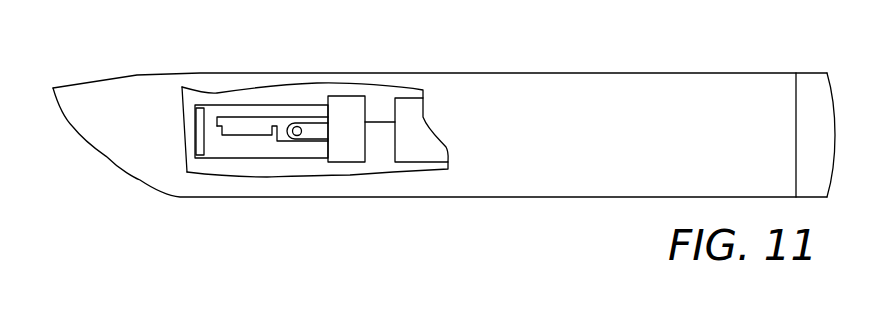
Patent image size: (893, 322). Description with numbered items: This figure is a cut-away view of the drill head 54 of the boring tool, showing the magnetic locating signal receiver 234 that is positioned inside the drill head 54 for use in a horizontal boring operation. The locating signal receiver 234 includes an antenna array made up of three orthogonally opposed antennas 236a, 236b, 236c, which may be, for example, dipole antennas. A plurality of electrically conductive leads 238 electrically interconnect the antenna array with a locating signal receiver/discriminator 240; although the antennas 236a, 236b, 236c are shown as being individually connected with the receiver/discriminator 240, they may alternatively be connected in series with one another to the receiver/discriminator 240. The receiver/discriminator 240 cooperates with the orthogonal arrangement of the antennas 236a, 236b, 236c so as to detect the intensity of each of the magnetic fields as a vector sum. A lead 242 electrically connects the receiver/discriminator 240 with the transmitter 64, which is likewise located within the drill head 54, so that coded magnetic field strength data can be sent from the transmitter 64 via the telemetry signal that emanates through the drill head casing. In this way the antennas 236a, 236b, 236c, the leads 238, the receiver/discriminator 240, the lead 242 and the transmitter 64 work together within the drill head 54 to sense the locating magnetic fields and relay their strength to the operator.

The drill head 54 is at (579, 73).
The transmitter 64 is at (407, 98).
The locating signal receiver 234 is at (265, 101).
The antenna 236a is at (245, 126).
The antenna 236b is at (192, 137).
The antenna 236c is at (300, 139).
The electrically conductive leads 238 is at (293, 136).
The receiver/discriminator 240 is at (350, 96).
The lead 242 is at (373, 122).